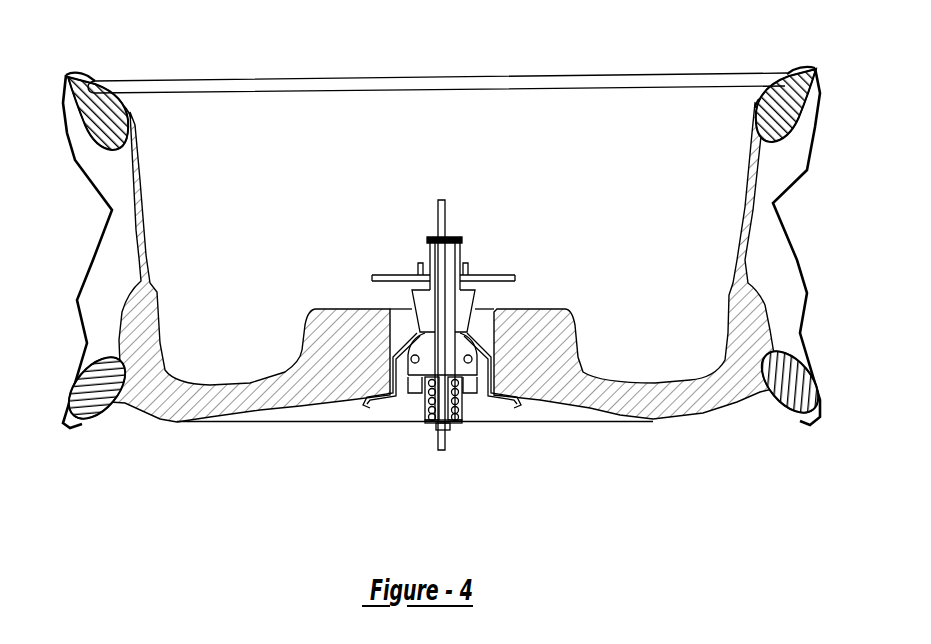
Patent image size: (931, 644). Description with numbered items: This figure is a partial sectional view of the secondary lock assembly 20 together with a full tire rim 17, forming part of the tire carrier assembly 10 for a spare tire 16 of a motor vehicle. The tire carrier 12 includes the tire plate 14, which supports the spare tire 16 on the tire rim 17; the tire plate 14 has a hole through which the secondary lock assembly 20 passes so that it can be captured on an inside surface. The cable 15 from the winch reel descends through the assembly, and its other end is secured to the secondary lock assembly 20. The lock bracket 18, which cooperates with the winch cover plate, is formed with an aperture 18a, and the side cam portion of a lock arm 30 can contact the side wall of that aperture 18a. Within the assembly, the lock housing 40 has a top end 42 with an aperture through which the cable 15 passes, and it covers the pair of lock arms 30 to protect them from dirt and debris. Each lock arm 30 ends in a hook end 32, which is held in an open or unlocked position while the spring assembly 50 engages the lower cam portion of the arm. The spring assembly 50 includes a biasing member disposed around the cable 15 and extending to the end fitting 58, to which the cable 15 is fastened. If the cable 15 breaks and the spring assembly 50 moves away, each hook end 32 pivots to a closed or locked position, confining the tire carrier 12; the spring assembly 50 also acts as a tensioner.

The tire carrier assembly 10 is at (443, 272).
The tire carrier 12 is at (443, 284).
The tire plate 14 is at (383, 405).
The cable 15 is at (440, 200).
The spare tire 16 is at (72, 424).
The tire rim 17 is at (658, 421).
The lock bracket 18 is at (432, 252).
The aperture 18a is at (463, 272).
The secondary lock assembly 20 is at (384, 297).
The lock arms 30 is at (498, 300).
The hook end 32 is at (425, 238).
The lock housing 40 is at (365, 157).
The top end 42 is at (443, 280).
The spring assembly 50 is at (445, 401).
The end fitting 58 is at (460, 422).